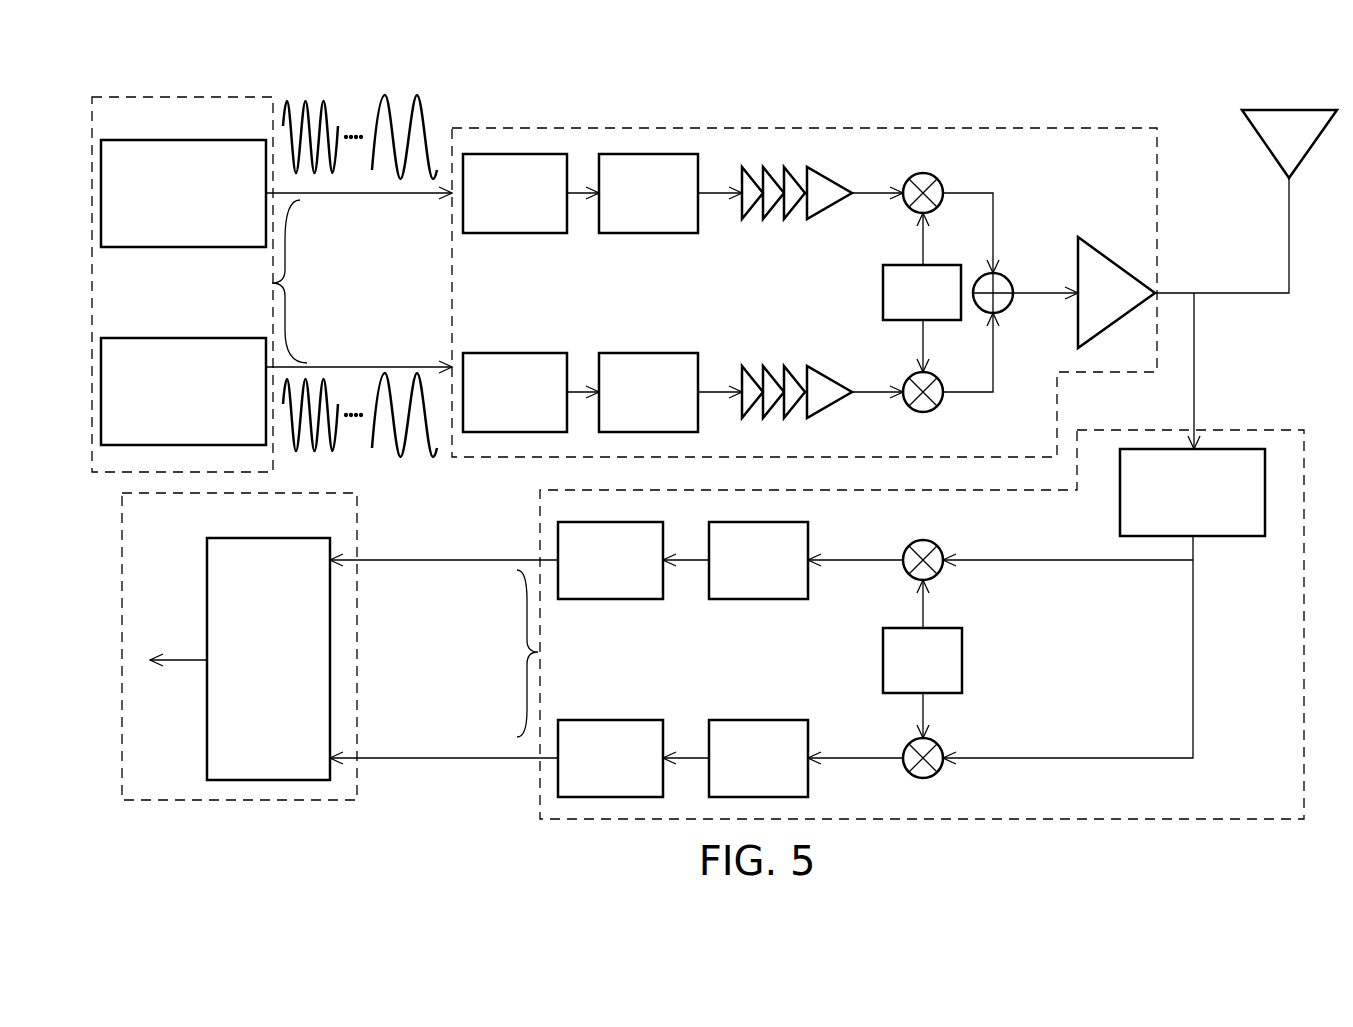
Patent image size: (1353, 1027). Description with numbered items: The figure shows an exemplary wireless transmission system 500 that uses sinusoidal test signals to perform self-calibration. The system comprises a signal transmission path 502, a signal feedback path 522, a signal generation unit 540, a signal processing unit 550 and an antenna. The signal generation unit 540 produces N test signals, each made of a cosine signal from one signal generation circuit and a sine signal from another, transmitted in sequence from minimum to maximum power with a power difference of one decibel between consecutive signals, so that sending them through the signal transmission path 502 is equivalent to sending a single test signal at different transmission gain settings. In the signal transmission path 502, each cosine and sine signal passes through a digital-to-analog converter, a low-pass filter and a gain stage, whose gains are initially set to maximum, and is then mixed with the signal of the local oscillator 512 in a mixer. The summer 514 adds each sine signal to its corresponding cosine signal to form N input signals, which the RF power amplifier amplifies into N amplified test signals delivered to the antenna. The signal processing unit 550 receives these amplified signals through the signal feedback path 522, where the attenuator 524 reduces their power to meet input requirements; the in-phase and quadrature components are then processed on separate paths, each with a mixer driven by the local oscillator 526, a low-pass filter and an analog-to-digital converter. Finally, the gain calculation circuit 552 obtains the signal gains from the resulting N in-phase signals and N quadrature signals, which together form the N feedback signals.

The wireless transmission system 500 is at (1205, 85).
The signal transmission path 502 is at (650, 128).
The local oscillator 512 is at (883, 293).
The summer 514 is at (1008, 308).
The signal feedback path 522 is at (817, 490).
The attenuator 524 is at (1235, 536).
The local oscillator 526 is at (962, 660).
The signal generation unit 540 is at (183, 97).
The signal processing unit 550 is at (292, 493).
The gain calculation circuit 552 is at (240, 538).